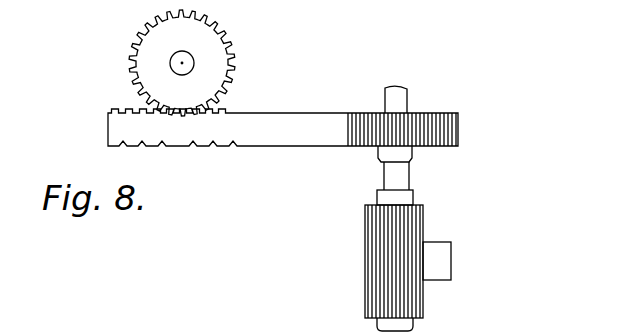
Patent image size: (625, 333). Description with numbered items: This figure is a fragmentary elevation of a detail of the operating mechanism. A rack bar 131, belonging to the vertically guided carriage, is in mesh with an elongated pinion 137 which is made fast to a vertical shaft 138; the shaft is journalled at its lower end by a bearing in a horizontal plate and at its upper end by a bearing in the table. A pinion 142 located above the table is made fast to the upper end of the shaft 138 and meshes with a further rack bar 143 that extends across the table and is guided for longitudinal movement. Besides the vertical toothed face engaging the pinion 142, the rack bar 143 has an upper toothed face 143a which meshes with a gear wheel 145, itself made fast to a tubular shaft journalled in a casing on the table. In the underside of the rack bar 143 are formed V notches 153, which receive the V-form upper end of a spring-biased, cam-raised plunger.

The gear wheel 145 is at (230, 62).
The rack bar 143 is at (282, 147).
The upper toothed face 143a is at (224, 112).
The V notches 153 is at (163, 147).
The pinion 142 is at (418, 119).
The vertical shaft 138 is at (406, 181).
The elongated pinion 137 is at (380, 294).
The rack bar 131 is at (451, 268).